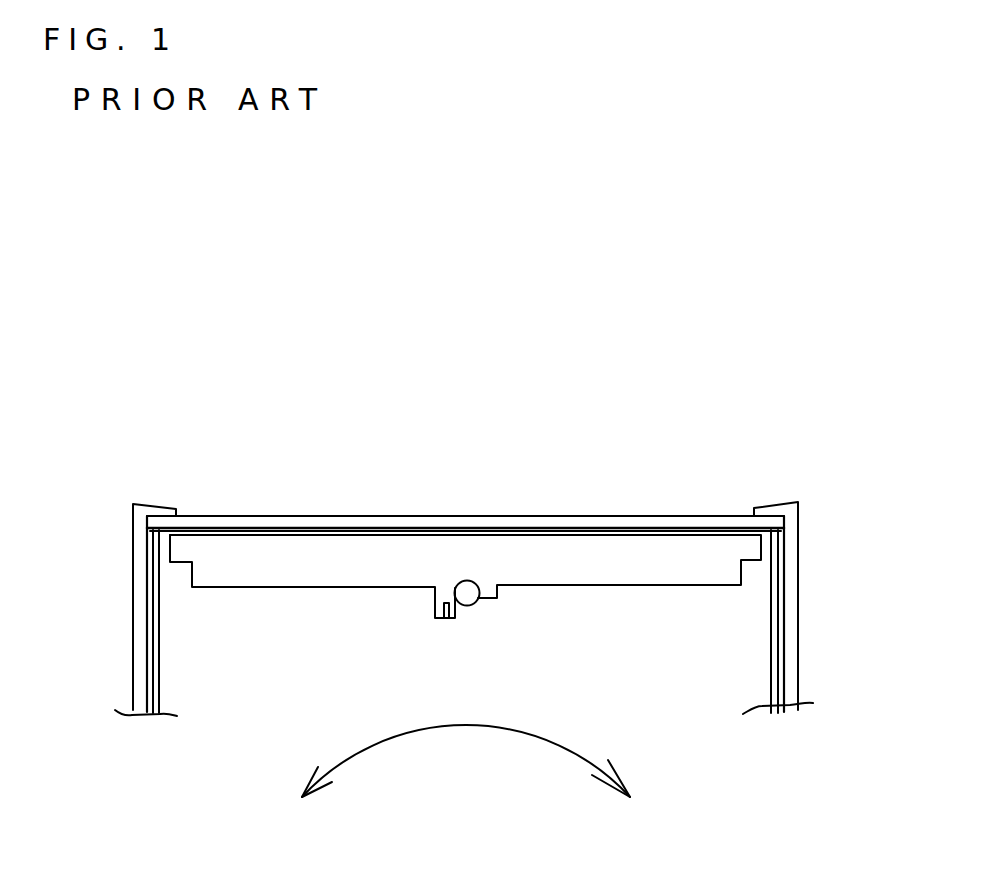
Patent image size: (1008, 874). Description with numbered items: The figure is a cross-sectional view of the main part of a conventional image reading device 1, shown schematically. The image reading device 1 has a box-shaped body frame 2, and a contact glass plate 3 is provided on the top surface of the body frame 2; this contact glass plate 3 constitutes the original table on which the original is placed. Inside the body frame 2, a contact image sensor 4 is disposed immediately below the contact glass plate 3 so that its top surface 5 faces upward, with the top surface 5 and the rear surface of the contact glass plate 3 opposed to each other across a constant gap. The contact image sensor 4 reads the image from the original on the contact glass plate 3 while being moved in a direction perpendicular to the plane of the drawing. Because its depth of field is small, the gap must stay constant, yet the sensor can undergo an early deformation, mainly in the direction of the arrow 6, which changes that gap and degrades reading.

The image reading device 1 is at (710, 377).
The body frame 2 is at (800, 613).
The contact glass plate 3 is at (508, 516).
The contact image sensor 4 is at (669, 575).
The top surface 5 is at (273, 535).
The arrow 6 is at (500, 728).